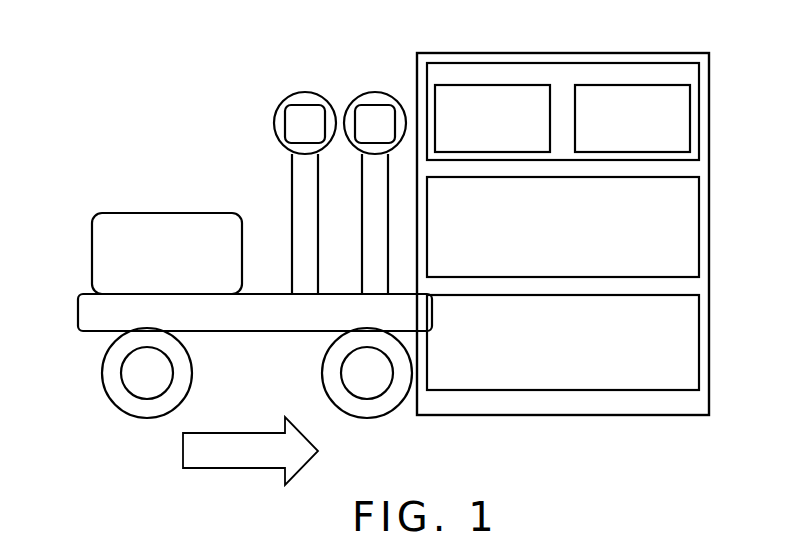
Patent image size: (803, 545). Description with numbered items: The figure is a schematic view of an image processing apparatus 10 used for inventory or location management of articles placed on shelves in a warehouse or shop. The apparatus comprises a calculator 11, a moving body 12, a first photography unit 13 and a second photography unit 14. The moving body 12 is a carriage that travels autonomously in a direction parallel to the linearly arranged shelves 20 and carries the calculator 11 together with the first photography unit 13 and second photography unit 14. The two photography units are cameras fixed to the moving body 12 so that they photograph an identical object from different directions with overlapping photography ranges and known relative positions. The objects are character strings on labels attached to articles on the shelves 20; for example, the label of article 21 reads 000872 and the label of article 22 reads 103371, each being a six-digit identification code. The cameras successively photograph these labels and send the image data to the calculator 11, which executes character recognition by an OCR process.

The image processing apparatus 10 is at (126, 118).
The calculator 11 is at (170, 212).
The moving body 12 is at (76, 313).
The first photography unit 13 is at (304, 92).
The second photography unit 14 is at (374, 92).
The shelves 20 is at (710, 90).
The article 21 is at (490, 84).
The article 22 is at (631, 84).